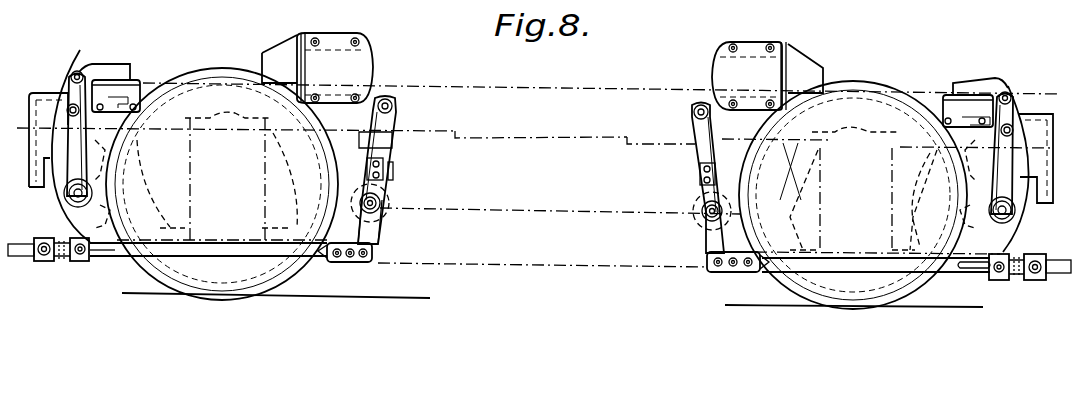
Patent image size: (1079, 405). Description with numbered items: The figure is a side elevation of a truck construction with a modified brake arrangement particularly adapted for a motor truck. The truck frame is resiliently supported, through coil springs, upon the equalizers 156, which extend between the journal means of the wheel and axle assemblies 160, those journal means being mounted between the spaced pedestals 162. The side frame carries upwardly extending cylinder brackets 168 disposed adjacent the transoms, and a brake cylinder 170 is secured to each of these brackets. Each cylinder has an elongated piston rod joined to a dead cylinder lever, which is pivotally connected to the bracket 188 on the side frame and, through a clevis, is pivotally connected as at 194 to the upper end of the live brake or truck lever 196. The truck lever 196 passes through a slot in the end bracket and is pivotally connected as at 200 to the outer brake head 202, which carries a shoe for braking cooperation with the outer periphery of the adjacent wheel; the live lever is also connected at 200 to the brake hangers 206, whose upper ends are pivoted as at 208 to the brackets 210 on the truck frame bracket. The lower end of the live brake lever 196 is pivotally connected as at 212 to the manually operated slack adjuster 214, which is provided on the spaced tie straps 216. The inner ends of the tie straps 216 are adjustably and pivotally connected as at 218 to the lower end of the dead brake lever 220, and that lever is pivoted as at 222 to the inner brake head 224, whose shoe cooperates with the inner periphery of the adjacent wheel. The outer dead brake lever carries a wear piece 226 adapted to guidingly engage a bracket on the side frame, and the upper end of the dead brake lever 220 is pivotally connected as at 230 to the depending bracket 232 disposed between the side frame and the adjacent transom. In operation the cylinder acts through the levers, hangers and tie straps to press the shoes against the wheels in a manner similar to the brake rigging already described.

The equalizers 156 is at (496, 212).
The wheel and axle assemblies 160 is at (823, 277).
The pedestals 162 is at (805, 193).
The cylinder brackets 168 is at (357, 58).
The brake cylinder 170 is at (280, 50).
The bracket 188 is at (110, 68).
The pivotal connection 194 is at (78, 72).
The live brake lever 196 is at (65, 162).
The pivotal connection 200 is at (90, 187).
The outer brake head 202 is at (95, 213).
The brake hangers 206 is at (80, 147).
The pivotal connection 208 is at (70, 100).
The brackets 210 is at (47, 97).
The pivotal connection 212 is at (80, 260).
The slack adjuster 214 is at (45, 258).
The tie straps 216 is at (168, 256).
The adjustable pivotal connection 218 is at (390, 188).
The dead brake lever 220 is at (373, 252).
The pivotal connection 222 is at (383, 200).
The inner brake head 224 is at (382, 216).
The wear piece 226 is at (385, 164).
The pivotal connection 230 is at (386, 100).
The depending bracket 232 is at (407, 100).